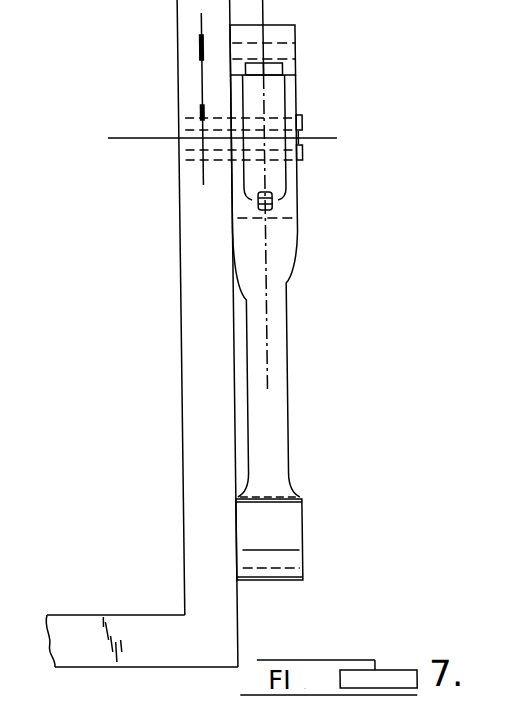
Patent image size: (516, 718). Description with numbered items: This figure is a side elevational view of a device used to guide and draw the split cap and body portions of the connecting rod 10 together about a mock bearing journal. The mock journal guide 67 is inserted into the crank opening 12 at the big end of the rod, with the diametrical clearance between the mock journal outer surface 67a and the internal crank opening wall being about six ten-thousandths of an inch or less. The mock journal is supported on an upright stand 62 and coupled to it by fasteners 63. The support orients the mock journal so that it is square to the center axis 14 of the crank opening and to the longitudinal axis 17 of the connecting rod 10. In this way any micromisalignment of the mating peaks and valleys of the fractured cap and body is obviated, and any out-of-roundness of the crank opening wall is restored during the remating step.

The connecting rod 10 is at (290, 348).
The crank opening 12 is at (304, 59).
The center axis 14 is at (340, 138).
The longitudinal axis 17 is at (268, 262).
The upright stand 62 is at (198, 312).
The fasteners 63 is at (308, 118).
The mock journal guide 67 is at (313, 130).
The mock journal outer surface 67a is at (304, 43).